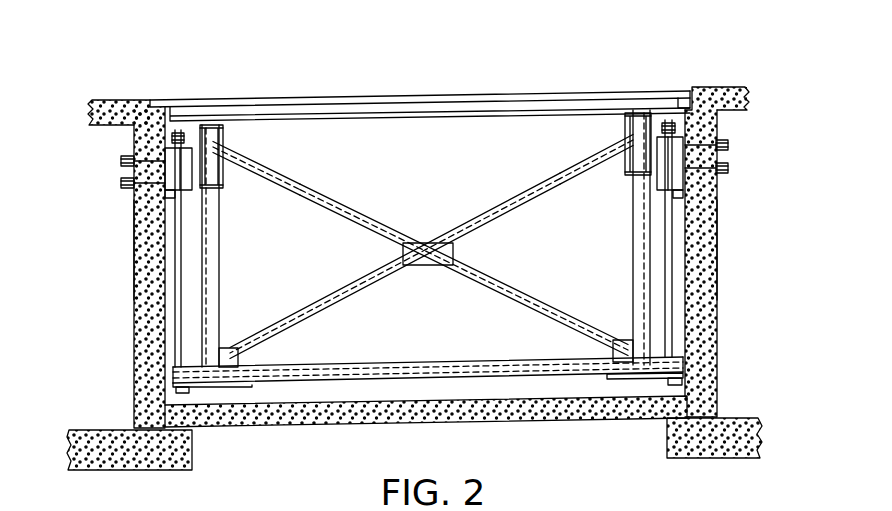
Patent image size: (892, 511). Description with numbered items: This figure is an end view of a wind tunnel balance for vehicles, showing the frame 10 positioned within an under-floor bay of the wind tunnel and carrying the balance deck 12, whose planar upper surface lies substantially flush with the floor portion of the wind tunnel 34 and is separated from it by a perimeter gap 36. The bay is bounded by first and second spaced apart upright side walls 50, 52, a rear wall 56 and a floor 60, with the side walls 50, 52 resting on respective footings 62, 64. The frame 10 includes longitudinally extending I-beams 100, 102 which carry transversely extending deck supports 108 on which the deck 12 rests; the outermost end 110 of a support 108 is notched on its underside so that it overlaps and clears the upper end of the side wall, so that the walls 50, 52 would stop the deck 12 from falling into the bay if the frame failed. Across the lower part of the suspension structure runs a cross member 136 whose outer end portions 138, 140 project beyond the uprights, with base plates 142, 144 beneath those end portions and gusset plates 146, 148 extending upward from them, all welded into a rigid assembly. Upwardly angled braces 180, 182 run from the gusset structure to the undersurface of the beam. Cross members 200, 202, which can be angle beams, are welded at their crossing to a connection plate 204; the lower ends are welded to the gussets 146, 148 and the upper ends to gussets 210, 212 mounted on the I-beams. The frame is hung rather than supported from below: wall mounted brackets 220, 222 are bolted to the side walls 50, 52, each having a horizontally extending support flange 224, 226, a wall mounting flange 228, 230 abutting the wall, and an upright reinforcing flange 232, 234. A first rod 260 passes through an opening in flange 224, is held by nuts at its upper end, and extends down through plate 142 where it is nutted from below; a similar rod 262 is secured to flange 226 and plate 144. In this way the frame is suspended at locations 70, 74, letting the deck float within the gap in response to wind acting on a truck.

The frame 10 is at (506, 443).
The deck 12 is at (454, 96).
The floor portion of the wind tunnel 34 is at (108, 100).
The perimeter gap 36 is at (152, 100).
The side wall 50 is at (713, 252).
The side wall 52 is at (150, 283).
The rear wall 56 is at (335, 148).
The floor 60 is at (330, 413).
The footing 62 is at (743, 417).
The footing 64 is at (85, 430).
The suspension location 70 is at (673, 388).
The suspension location 74 is at (177, 395).
The I-beam 100 is at (633, 131).
The I-beam 102 is at (212, 135).
The deck support 108 is at (421, 120).
The end of support 110 is at (688, 105).
The cross member 136 is at (550, 368).
The outer end portion 138 is at (680, 363).
The outer end portion 140 is at (173, 380).
The base plate 142 is at (622, 380).
The base plate 144 is at (217, 385).
The gusset plate 146 is at (627, 353).
The gusset plate 148 is at (229, 352).
The brace 180 is at (638, 255).
The brace 182 is at (165, 320).
The cross member 200 is at (472, 280).
The cross member 202 is at (508, 215).
The connection plate 204 is at (453, 250).
The reinforcing gusset 210 is at (218, 177).
The gusset 212 is at (627, 168).
The wall mounted bracket 220 is at (698, 154).
The wall mounted bracket 222 is at (150, 167).
The support flange 224 is at (707, 133).
The support flange 226 is at (165, 150).
The wall mounting flange 228 is at (682, 177).
The wall mounting flange 230 is at (165, 185).
The reinforcing flange 232 is at (680, 193).
The reinforcing flange 234 is at (167, 197).
The rod 260 is at (672, 287).
The rod 262 is at (178, 242).